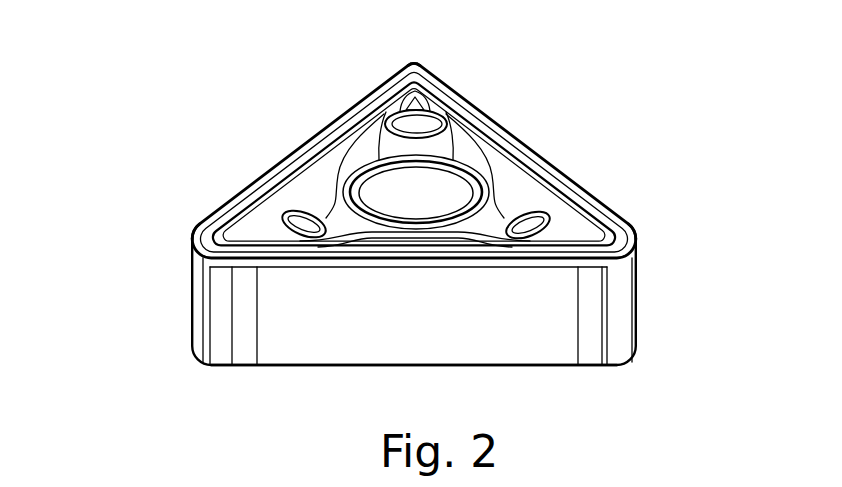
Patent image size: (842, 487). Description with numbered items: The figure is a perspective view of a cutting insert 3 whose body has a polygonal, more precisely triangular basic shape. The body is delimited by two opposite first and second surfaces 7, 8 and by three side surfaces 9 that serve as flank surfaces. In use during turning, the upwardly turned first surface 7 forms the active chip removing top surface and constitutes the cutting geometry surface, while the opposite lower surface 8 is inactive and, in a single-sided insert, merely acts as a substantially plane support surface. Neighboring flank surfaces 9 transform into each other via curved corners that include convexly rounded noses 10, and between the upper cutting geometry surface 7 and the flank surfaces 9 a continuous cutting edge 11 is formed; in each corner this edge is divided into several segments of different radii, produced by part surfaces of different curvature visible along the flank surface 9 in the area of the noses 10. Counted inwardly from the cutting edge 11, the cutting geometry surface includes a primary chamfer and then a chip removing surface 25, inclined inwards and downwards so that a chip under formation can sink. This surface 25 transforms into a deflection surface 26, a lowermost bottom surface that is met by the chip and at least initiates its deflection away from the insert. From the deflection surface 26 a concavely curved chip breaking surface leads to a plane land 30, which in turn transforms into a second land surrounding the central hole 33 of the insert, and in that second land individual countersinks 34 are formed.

The cutting insert 3 is at (140, 170).
The first surface 7 is at (333, 142).
The second surface 8 is at (311, 381).
The side surface 9 is at (265, 175).
The nose 10 is at (419, 58).
The cutting edge 11 is at (420, 272).
The chip removing surface 25 is at (305, 163).
The deflection surface 26 is at (463, 122).
The plane land 30 is at (243, 245).
The central hole 33 is at (450, 208).
The countersink 34 is at (313, 233).